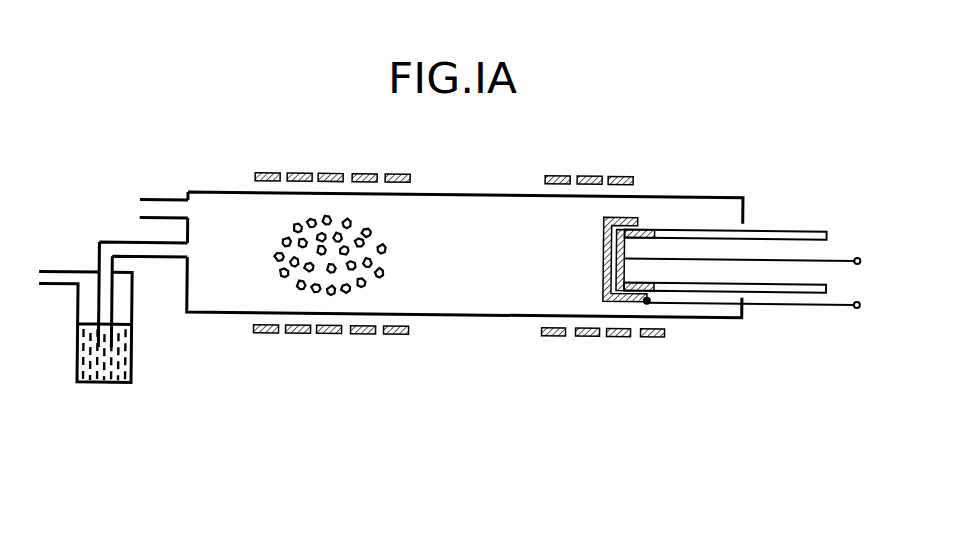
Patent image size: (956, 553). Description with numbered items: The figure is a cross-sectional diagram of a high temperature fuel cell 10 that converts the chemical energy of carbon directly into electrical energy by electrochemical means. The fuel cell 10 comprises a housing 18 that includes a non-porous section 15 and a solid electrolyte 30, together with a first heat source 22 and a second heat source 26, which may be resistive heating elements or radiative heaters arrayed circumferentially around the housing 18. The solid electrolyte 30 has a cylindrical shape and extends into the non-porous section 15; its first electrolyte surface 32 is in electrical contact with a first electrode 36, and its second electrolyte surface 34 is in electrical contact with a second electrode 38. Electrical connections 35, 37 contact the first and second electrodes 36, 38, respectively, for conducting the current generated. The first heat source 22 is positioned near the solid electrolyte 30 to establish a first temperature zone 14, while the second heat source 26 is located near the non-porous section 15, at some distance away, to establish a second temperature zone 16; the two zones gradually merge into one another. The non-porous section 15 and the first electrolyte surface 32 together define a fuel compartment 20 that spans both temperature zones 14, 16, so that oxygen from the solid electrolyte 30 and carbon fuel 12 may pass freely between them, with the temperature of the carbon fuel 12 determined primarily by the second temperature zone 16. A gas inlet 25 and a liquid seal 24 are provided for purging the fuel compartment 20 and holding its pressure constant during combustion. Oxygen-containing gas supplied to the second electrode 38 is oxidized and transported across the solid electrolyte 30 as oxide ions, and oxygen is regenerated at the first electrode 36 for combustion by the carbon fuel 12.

The high temperature fuel cell 10 is at (628, 139).
The carbon fuel 12 is at (394, 280).
The first temperature zone 14 is at (563, 223).
The non-porous section 15 is at (477, 193).
The second temperature zone 16 is at (400, 220).
The housing 18 is at (224, 182).
The fuel compartment 20 is at (236, 284).
The first heat source 22 is at (600, 173).
The liquid seal 24 is at (106, 324).
The gas inlet 25 is at (150, 210).
The second heat source 26 is at (343, 165).
The solid electrolyte 30 is at (775, 215).
The first electrolyte surface 32 is at (710, 293).
The second electrolyte surface 34 is at (720, 240).
The electrical connection 35 is at (803, 302).
The first electrode 36 is at (605, 250).
The electrical connection 37 is at (835, 257).
The second electrode 38 is at (662, 244).